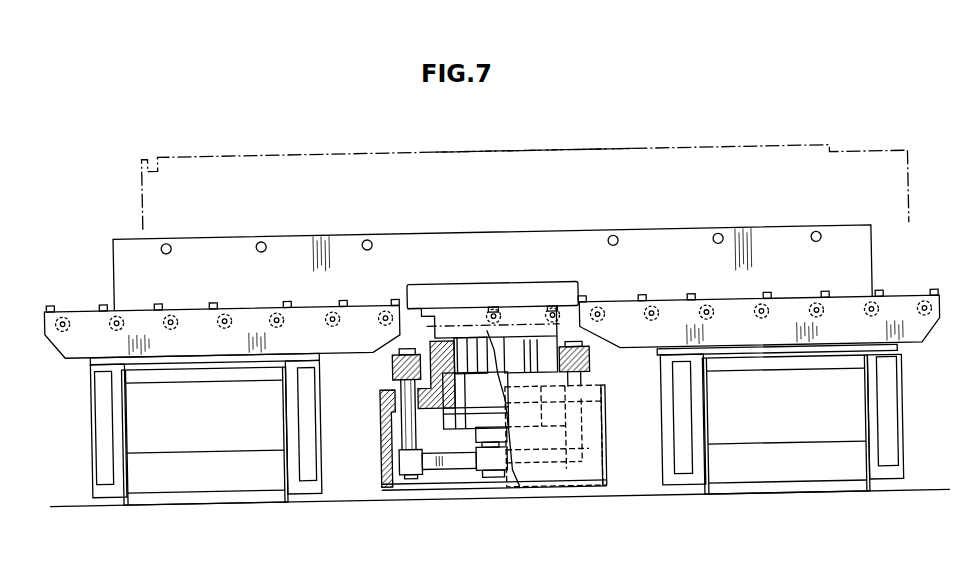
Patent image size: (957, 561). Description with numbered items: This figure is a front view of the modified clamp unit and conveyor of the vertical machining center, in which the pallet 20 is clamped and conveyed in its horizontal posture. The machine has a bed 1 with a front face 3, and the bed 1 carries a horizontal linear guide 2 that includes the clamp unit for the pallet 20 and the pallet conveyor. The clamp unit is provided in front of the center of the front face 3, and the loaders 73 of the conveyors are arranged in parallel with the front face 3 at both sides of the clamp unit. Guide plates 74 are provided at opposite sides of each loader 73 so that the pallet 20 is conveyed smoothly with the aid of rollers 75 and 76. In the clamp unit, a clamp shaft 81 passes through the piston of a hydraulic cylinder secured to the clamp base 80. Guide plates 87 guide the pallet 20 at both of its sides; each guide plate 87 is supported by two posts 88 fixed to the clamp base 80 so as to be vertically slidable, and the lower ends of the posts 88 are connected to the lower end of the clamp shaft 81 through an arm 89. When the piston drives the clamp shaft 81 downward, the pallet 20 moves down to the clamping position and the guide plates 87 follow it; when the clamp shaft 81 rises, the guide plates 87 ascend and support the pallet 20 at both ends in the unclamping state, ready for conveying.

The bed 1 is at (914, 175).
The horizontal linear guide 2 is at (782, 148).
The front face 3 is at (633, 150).
The pallet 20 is at (507, 283).
The loader 73 is at (100, 414).
The guide plate 74 is at (272, 299).
The roller 75 is at (180, 322).
The roller 76 is at (162, 297).
The clamp base 80 is at (384, 428).
The clamp shaft 81 is at (493, 473).
The guide plate 87 is at (563, 331).
The post 88 is at (412, 415).
The arm 89 is at (447, 468).